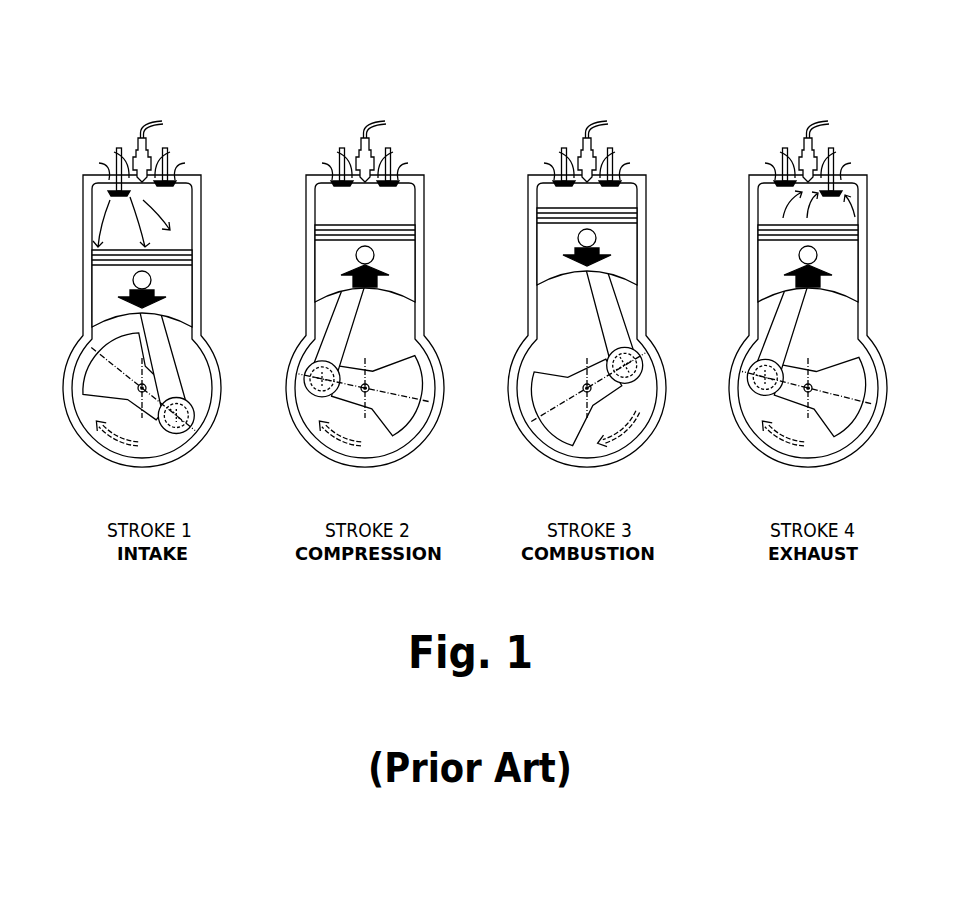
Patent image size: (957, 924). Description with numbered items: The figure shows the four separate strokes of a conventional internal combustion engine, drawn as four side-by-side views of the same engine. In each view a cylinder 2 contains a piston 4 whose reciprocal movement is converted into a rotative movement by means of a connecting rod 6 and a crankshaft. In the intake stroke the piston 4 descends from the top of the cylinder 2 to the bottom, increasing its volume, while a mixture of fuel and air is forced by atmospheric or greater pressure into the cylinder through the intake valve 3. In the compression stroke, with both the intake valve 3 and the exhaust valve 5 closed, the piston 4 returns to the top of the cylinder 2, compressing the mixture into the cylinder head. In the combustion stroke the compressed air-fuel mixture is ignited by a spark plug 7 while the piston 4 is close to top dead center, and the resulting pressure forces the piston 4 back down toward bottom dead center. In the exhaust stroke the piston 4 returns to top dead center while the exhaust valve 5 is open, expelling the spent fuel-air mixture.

The cylinder 2 is at (87, 220).
The intake valve 3 is at (118, 157).
The piston 4 is at (125, 273).
The exhaust valve 5 is at (163, 160).
The connecting rod 6 is at (157, 367).
The spark plug 7 is at (140, 147).